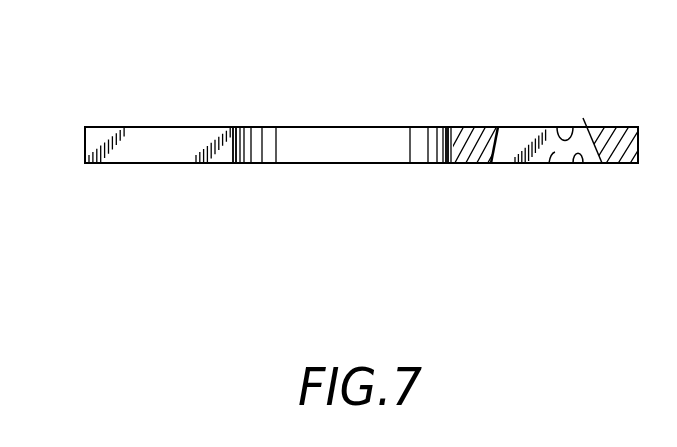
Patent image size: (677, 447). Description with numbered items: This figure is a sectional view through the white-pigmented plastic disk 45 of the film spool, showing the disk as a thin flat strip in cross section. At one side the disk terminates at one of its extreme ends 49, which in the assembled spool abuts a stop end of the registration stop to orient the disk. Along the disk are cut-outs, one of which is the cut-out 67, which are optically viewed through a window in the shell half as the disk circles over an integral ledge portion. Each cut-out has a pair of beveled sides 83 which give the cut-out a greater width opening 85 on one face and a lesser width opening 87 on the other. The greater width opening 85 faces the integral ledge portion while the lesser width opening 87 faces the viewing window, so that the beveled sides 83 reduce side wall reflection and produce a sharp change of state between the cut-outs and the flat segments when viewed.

The white-pigmented plastic disk 45 is at (384, 124).
The extreme end 49 is at (167, 140).
The beveled sides 83 is at (502, 138).
The lesser width opening 87 is at (557, 127).
The greater width opening 85 is at (586, 163).
The cut-out 67 is at (549, 163).